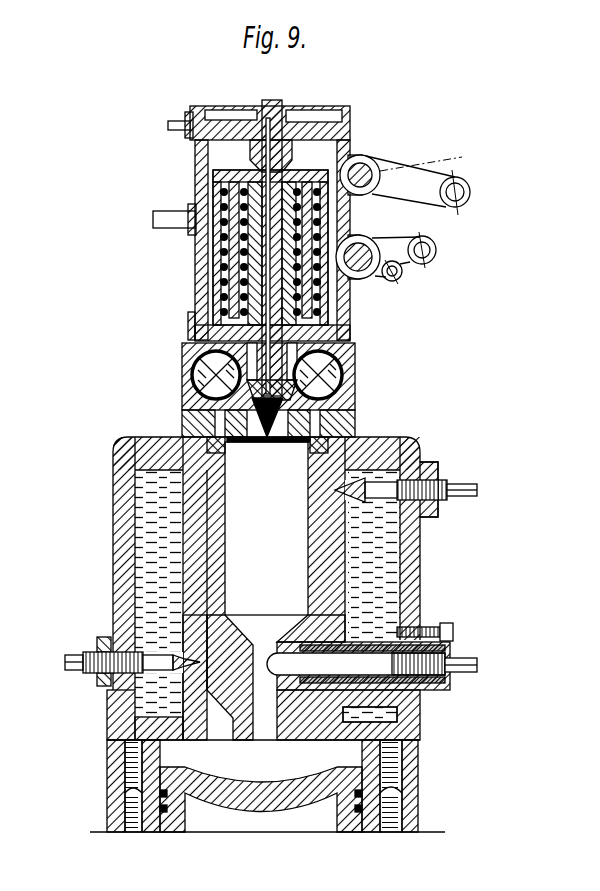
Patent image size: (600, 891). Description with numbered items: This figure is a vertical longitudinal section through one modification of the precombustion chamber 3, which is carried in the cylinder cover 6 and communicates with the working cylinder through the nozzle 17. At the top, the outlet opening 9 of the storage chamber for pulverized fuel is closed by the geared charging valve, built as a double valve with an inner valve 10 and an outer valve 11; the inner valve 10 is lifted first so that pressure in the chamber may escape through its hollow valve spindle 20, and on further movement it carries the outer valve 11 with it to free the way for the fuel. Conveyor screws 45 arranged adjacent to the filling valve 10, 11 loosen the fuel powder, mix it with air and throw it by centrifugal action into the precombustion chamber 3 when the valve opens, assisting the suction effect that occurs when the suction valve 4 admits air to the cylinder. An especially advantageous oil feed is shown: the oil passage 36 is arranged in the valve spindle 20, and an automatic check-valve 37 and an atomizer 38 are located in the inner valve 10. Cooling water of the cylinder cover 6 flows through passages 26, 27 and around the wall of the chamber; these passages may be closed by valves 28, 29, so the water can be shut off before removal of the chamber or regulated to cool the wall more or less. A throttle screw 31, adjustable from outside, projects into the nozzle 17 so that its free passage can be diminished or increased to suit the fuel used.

The precombustion chamber 3 is at (250, 510).
The suction valve 4 is at (283, 355).
The cylinder cover 6 is at (182, 400).
The outlet opening 9 is at (205, 425).
The inner valve 10 is at (330, 422).
The outer valve 11 is at (182, 342).
The nozzle 17 is at (265, 733).
The valve spindle 20 is at (250, 263).
The passage 26 is at (180, 668).
The passage 27 is at (355, 500).
The valve 28 is at (185, 657).
The valve 29 is at (437, 515).
The throttle screw 31 is at (348, 665).
The oil passage 36 is at (227, 301).
The automatic check-valve 37 is at (190, 408).
The atomizer 38 is at (300, 432).
The conveyor screws 45 is at (210, 376).